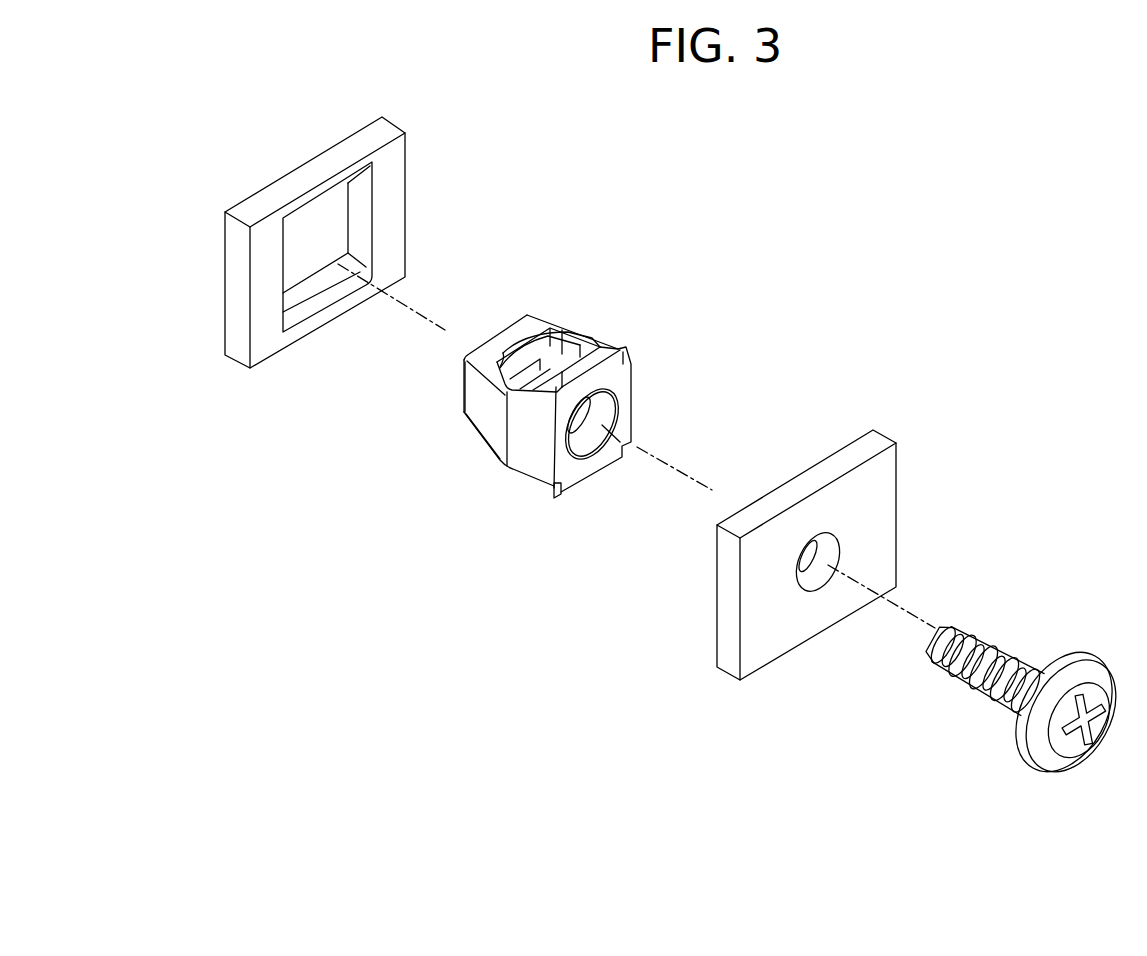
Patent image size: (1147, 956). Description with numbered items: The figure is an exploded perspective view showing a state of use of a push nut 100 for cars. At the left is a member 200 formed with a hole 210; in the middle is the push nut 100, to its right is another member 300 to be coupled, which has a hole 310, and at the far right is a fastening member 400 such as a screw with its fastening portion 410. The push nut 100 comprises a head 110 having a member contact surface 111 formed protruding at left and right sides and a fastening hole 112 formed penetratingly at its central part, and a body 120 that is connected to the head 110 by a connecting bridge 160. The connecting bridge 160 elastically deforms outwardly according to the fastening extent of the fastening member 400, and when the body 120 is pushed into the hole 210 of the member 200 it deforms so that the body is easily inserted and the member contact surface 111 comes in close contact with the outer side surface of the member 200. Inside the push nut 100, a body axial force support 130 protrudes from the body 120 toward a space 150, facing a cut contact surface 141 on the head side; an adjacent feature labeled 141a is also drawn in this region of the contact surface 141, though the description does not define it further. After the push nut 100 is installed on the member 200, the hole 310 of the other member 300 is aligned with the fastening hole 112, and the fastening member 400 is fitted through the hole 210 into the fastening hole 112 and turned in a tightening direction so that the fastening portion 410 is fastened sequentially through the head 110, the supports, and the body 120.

The push nut 100 is at (441, 376).
The head 110 is at (623, 402).
The member contact surface 111 is at (573, 493).
The fastening hole 112 is at (588, 427).
The body 120 is at (483, 358).
The body axial force support 130 is at (547, 386).
The contact surface 141 is at (563, 360).
The nut seat guide 141a is at (542, 368).
The space 150 is at (577, 348).
The connecting bridge 160 is at (505, 396).
The member 200 is at (265, 327).
The hole 210 is at (323, 232).
The another member 300 is at (877, 495).
The hole 310 is at (813, 563).
The fastening member 400 is at (1084, 673).
The fastening portion 410 is at (1002, 643).